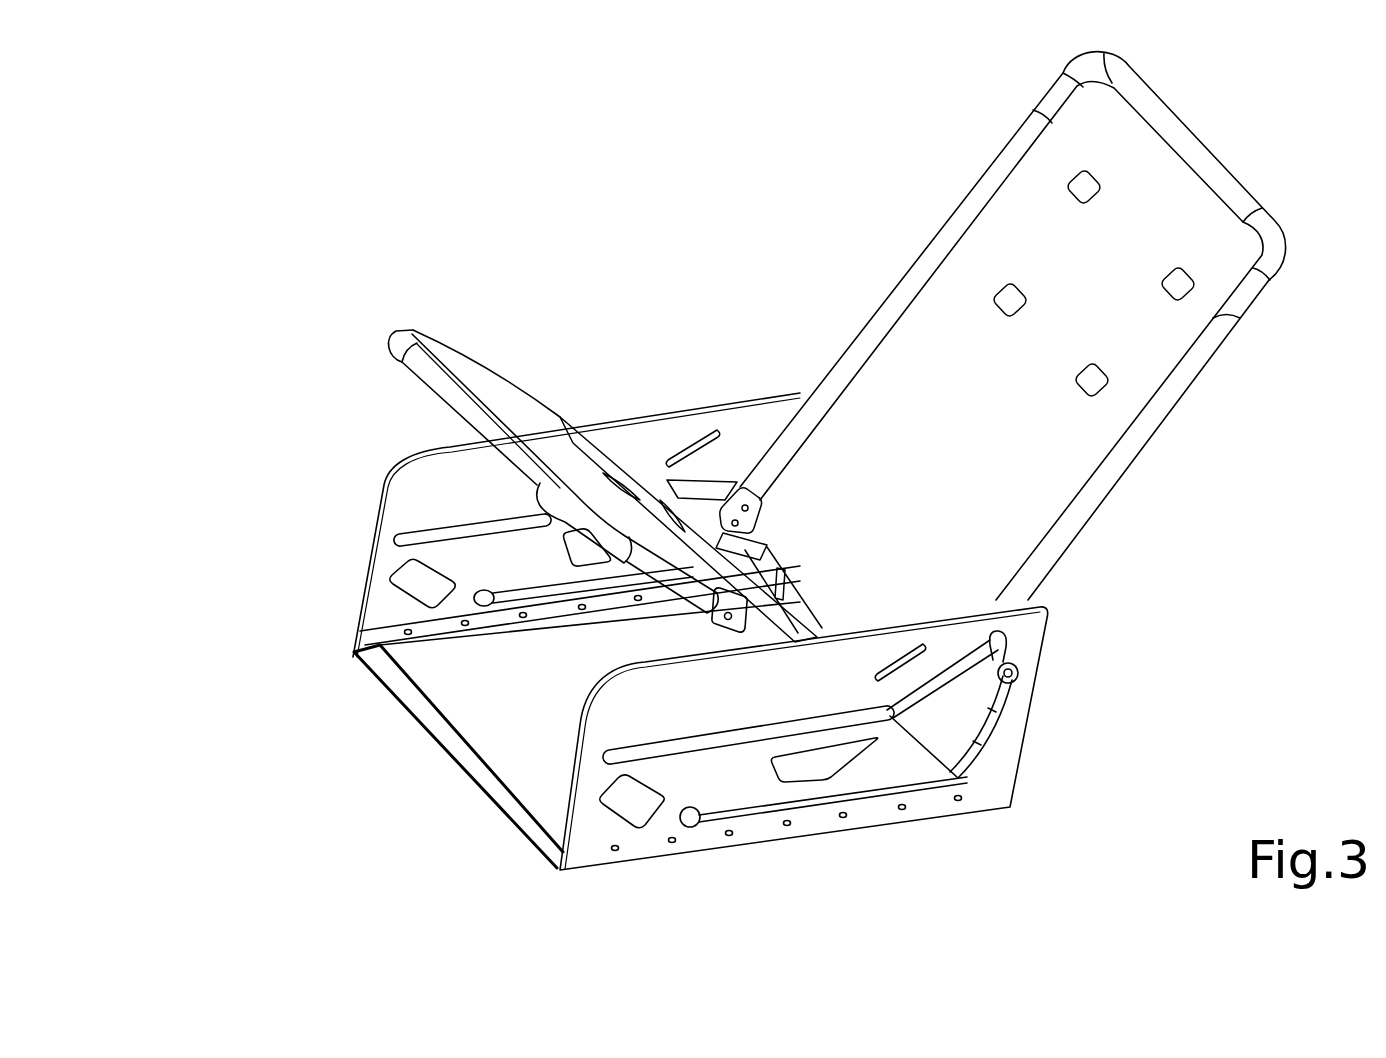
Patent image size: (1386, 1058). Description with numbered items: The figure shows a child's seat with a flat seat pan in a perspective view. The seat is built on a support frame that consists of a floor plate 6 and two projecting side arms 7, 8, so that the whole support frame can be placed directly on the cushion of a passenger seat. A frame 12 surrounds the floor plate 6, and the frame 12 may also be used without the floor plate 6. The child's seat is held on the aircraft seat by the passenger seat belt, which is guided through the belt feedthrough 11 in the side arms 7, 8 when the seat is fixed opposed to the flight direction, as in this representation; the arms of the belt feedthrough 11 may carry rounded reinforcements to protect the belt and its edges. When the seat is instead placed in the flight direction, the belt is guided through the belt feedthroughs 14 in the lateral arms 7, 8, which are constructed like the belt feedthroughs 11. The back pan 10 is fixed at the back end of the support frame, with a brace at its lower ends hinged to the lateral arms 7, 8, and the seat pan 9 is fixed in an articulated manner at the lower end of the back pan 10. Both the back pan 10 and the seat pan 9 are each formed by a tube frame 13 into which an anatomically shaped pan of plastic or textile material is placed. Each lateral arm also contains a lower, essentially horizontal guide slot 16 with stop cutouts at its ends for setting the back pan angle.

The floor plate 6 is at (518, 717).
The side arm 7 is at (430, 491).
The side arm 8 is at (790, 770).
The seat pan 9 is at (488, 390).
The back pan 10 is at (958, 375).
The belt feedthrough 11 is at (620, 820).
The frame 12 is at (433, 725).
The tube frame 13 is at (942, 250).
The belt feedthrough 14 is at (808, 767).
The guide slot 16 is at (900, 790).